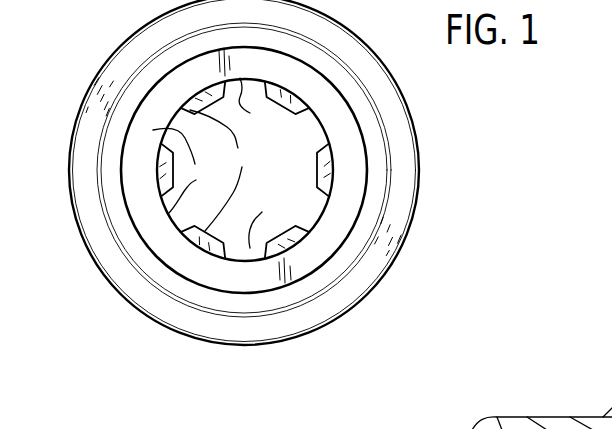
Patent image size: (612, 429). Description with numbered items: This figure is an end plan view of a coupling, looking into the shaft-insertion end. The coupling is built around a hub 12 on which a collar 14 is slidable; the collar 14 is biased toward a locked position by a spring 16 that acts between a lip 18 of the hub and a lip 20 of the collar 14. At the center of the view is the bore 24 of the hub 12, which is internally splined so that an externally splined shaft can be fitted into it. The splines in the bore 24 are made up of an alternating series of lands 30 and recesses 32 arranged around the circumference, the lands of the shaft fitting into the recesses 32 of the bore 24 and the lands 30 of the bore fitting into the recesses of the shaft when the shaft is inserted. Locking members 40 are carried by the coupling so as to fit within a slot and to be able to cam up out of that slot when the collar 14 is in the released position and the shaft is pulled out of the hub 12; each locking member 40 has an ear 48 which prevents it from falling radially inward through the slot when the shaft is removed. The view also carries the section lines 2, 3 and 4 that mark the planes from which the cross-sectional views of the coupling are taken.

The section line 2— 2 is at (279, 390).
The section line 3— 3 is at (558, 372).
The section line 4— 4 is at (88, 82).
The hub 12 is at (155, 242).
The collar 14 is at (92, 222).
The spring 16 is at (448, 428).
The lip of the hub 18 is at (468, 428).
The lip of the collar 20 is at (428, 428).
The bore 24 is at (305, 140).
The lands 30 is at (289, 87).
The recesses 32 is at (308, 119).
The locking members 40 is at (555, 428).
The ear 48 is at (498, 428).